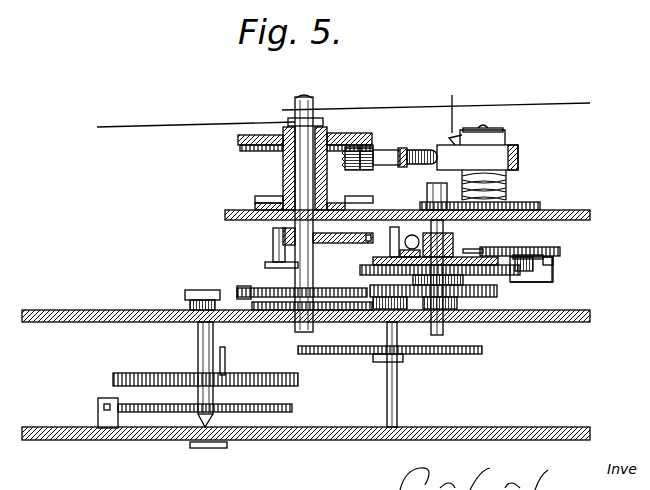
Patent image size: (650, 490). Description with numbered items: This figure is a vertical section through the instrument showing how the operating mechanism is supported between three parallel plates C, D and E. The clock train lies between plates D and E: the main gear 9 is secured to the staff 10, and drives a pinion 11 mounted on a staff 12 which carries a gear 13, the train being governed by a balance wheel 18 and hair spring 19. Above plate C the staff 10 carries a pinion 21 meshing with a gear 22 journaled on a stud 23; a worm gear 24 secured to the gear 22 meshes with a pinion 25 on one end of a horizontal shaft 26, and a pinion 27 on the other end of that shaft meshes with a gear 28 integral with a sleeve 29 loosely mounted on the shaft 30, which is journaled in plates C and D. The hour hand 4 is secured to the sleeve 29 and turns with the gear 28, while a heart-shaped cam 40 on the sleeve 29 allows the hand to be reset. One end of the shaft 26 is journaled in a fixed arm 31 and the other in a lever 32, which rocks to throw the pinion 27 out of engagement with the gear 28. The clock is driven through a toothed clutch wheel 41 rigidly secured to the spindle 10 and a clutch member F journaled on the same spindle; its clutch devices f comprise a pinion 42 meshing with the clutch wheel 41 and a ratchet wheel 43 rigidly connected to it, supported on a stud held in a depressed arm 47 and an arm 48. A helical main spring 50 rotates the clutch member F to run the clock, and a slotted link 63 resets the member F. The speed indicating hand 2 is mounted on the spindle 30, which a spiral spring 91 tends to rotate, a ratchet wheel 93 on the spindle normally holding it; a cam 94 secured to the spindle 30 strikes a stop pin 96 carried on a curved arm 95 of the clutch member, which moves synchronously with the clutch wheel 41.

The speed indicating hand 2 is at (480, 105).
The hour hand 4 is at (141, 126).
The main gear 9 is at (499, 291).
The staff 10 is at (480, 248).
The pinion 11 is at (378, 287).
The staff 12 is at (398, 412).
The gear 13 is at (478, 355).
The balance wheel 18 is at (167, 374).
The hair spring 19 is at (292, 408).
The pinion 21 is at (427, 200).
The gear 22 is at (541, 206).
The stud 23 is at (503, 128).
The worm gear 24 is at (510, 187).
The pinion 25 is at (449, 103).
The horizontal shaft 26 is at (418, 150).
The pinion 27 is at (352, 170).
The gear 28 is at (240, 148).
The sleeve 29 is at (283, 182).
The shaft 30 is at (299, 100).
The fixed arm 31 is at (477, 158).
The lever 32 is at (388, 166).
The heart-shaped cam 40 is at (255, 200).
The toothed clutch wheel 41 is at (470, 300).
The pinion 42 is at (533, 267).
The ratchet wheel 43 is at (554, 258).
The depressed arm 47 is at (548, 281).
The arm 48 is at (524, 258).
The helical spring 50 is at (380, 195).
The link 63 is at (435, 323).
The spiral spring 91 is at (251, 280).
The ratchet wheel 93 is at (264, 312).
The cam 94 is at (352, 243).
The curved arm 95 is at (345, 288).
The stop pin 96 is at (273, 244).
The plate C is at (590, 214).
The plate D is at (590, 315).
The plate E is at (590, 432).
The clutch member F is at (453, 240).
The clutch devices f is at (556, 256).